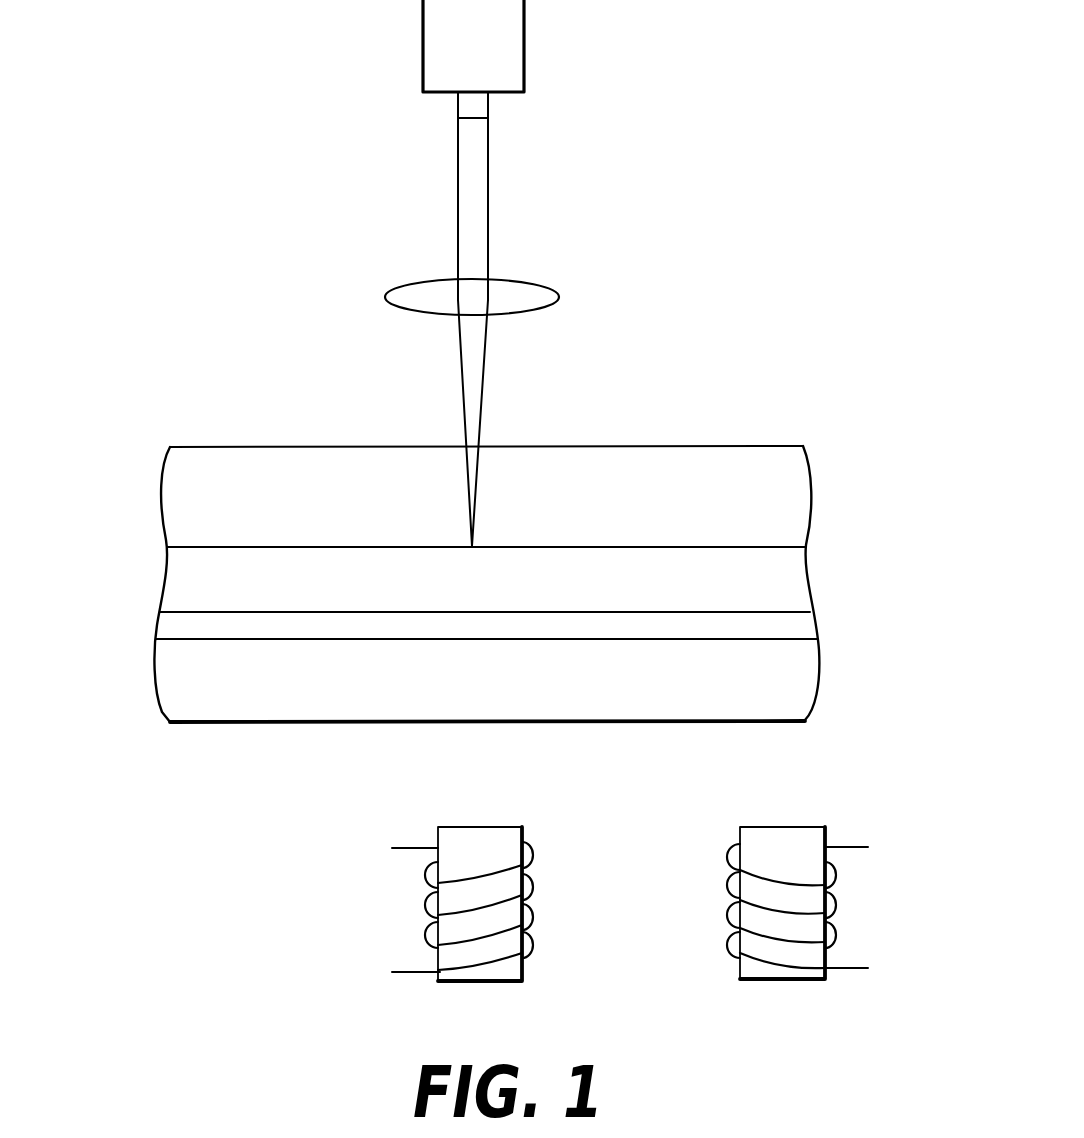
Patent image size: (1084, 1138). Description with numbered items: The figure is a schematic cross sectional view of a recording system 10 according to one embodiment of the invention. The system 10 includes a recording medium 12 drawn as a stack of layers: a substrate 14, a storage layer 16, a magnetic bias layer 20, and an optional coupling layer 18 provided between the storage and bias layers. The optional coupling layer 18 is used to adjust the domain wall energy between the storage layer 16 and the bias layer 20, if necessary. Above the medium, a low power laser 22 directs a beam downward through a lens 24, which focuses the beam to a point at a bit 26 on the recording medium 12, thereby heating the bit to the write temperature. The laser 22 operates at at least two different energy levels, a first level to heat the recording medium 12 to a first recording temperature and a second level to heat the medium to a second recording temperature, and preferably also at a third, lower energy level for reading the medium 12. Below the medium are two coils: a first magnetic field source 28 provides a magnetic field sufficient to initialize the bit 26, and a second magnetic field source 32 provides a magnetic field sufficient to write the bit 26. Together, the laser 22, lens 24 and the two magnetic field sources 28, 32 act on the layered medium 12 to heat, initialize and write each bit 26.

The recording system 10 is at (692, 205).
The recording medium 12 is at (806, 450).
The substrate 14 is at (195, 492).
The storage layer 16 is at (207, 580).
The coupling layer 18 is at (185, 625).
The magnetic bias layer 20 is at (187, 677).
The laser 22 is at (495, 33).
The lens 24 is at (537, 283).
The bit 26 is at (472, 546).
The first magnetic field source 28 is at (797, 842).
The second magnetic field source 32 is at (490, 848).